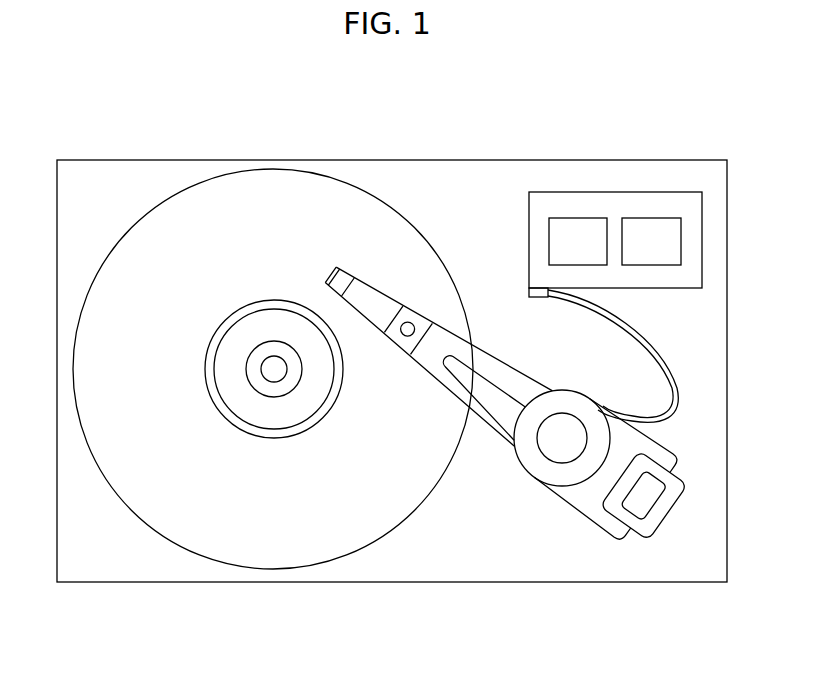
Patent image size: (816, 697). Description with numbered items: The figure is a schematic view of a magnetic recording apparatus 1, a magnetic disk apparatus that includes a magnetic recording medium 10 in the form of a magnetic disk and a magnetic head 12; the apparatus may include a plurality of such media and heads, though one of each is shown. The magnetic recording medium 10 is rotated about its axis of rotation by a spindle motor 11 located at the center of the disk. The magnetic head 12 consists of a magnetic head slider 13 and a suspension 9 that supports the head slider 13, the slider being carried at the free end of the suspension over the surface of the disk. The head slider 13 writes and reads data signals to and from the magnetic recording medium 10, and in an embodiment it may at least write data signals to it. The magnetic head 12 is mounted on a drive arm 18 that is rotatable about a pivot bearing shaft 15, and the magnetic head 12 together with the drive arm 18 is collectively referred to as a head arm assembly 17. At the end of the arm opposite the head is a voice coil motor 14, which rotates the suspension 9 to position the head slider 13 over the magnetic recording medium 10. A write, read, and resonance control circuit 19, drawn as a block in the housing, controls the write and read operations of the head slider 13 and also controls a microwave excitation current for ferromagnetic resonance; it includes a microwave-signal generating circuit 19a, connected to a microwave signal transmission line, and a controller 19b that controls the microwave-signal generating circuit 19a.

The magnetic recording apparatus 1 is at (181, 127).
The suspension 9 is at (377, 297).
The magnetic recording medium 10 is at (178, 537).
The spindle motor 11 is at (270, 376).
The magnetic head 12 is at (435, 97).
The magnetic head slider 13 is at (350, 282).
The voice coil motor 14 is at (658, 510).
The pivot bearing shaft 15 is at (570, 398).
The head arm assembly 17 is at (562, 508).
The drive arm 18 is at (503, 430).
The write, read, and resonance control circuit 19 is at (667, 278).
The microwave-signal generating circuit 19a is at (592, 228).
The controller 19b is at (665, 228).